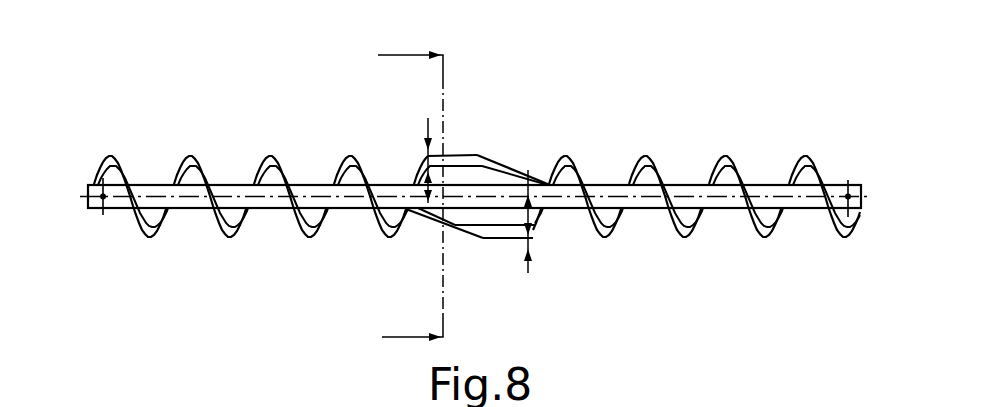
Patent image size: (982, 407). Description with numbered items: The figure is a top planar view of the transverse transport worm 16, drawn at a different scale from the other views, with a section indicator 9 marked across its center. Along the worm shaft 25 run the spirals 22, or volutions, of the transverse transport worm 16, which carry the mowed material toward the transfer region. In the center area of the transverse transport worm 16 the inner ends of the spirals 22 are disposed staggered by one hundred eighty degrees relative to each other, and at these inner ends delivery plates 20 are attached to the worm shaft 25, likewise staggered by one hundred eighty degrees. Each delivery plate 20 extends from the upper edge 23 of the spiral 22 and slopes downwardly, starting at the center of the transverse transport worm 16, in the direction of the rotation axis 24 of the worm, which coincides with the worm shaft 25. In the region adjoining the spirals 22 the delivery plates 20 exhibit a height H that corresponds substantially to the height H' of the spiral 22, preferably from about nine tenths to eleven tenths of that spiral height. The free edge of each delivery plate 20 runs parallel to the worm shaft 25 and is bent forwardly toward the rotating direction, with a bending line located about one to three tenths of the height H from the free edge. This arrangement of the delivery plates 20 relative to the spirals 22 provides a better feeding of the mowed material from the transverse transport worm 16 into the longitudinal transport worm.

The section line 9- 9 is at (410, 198).
The transverse transport worm 16 is at (679, 152).
The delivery plates 20 is at (447, 175).
The spirals 22 is at (558, 158).
The upper edge of the spiral 23 is at (420, 158).
The rotation axis 24 is at (868, 200).
The worm shaft 25 is at (755, 193).
The height of the delivery plates H is at (378, 142).
The height of the spiral H' is at (584, 237).